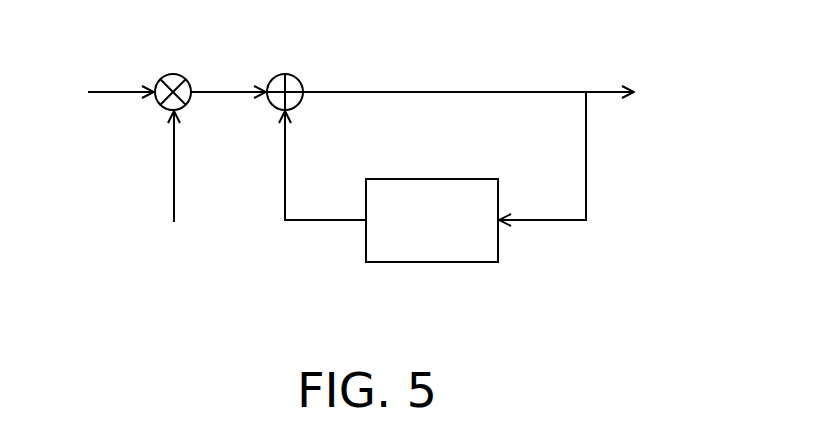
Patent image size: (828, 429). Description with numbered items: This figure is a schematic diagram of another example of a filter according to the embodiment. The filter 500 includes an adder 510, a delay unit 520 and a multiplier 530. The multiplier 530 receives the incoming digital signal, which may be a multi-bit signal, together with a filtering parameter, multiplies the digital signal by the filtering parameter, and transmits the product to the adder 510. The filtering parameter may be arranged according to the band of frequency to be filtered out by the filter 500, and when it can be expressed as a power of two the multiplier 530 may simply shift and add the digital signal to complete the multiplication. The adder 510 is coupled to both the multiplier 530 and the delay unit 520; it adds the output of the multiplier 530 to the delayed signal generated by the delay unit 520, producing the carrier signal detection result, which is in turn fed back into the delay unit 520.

The filter 500 is at (680, 293).
The adder 510 is at (295, 75).
The delay unit 520 is at (432, 179).
The multiplier 530 is at (183, 75).